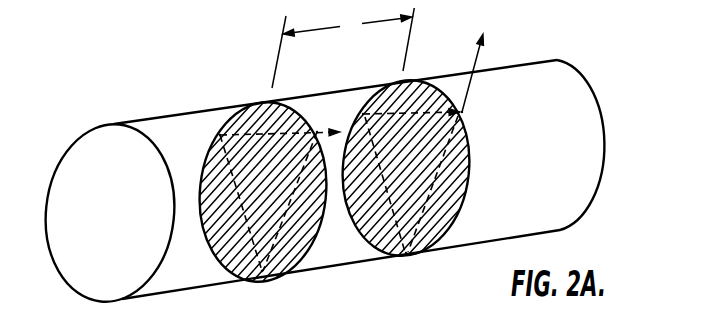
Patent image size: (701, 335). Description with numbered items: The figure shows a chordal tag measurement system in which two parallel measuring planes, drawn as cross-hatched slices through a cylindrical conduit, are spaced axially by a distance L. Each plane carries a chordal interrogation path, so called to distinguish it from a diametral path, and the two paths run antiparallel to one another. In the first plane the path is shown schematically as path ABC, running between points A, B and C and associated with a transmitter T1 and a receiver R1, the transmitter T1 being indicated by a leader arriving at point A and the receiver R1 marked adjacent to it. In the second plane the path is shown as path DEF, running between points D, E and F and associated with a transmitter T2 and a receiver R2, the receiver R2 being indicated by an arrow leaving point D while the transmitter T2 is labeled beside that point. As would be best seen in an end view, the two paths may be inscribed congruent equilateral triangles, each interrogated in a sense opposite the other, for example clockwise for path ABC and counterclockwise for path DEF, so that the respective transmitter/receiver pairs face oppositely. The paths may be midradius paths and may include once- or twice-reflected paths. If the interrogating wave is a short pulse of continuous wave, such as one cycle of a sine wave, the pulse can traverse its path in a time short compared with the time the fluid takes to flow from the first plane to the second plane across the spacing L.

The transmitter T1 is at (319, 123).
The transmitter T2 is at (470, 108).
The axial distance L is at (343, 48).
The receiver R1 is at (285, 145).
The receiver R2 is at (490, 73).
The path point A is at (330, 121).
The path point B is at (264, 291).
The path point C is at (210, 139).
The path point D is at (476, 97).
The path point E is at (357, 109).
The path point F is at (410, 272).